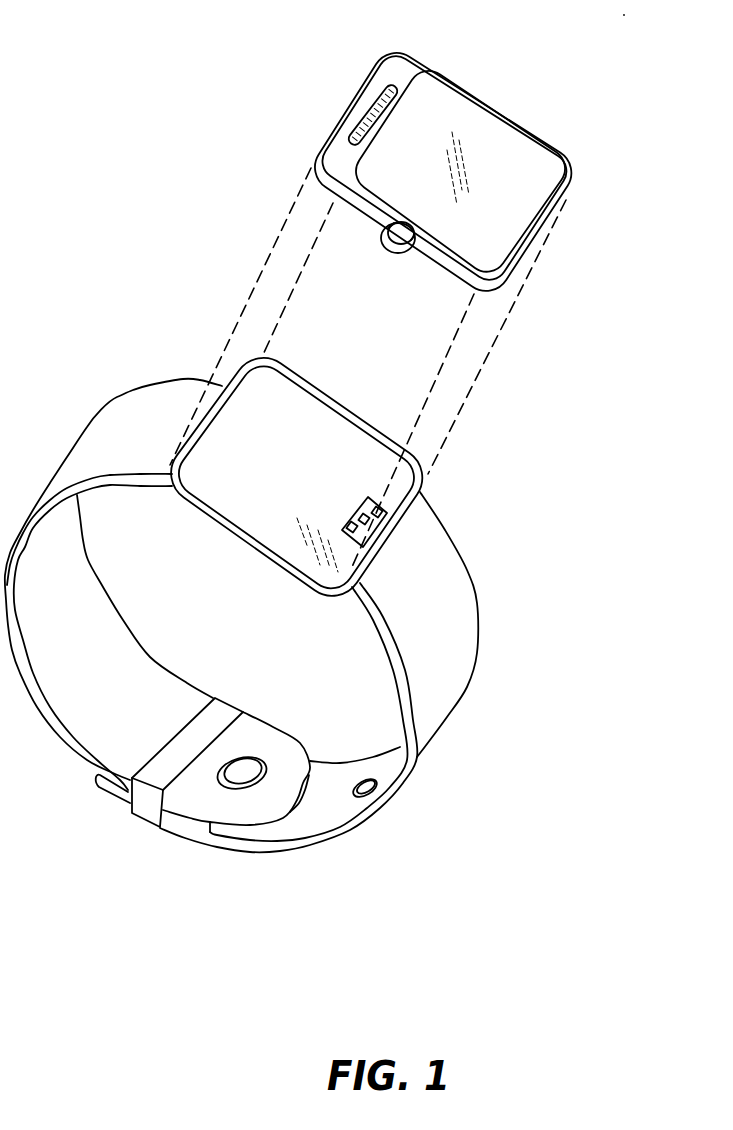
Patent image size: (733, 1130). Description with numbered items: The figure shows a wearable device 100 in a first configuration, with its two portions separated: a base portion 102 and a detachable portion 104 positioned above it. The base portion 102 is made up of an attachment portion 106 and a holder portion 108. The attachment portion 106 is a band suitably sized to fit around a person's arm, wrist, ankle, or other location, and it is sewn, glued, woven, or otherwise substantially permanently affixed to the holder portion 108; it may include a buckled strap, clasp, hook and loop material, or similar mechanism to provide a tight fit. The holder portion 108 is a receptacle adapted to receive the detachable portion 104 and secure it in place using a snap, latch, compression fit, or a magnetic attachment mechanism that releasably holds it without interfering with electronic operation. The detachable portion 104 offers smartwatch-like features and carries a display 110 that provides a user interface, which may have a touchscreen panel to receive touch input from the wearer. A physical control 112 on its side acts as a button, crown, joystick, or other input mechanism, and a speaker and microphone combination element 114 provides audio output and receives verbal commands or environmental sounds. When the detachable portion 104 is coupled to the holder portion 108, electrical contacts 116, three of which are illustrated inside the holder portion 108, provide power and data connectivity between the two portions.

The wearable device 100 is at (624, 872).
The base portion 102 is at (459, 518).
The detachable portion 104 is at (501, 88).
The attachment portion 106 is at (452, 568).
The holder portion 108 is at (318, 423).
The display 110 is at (499, 190).
The physical control 112 is at (398, 252).
The speaker and microphone combination element 114 is at (372, 110).
The electrical contacts 116 is at (358, 518).